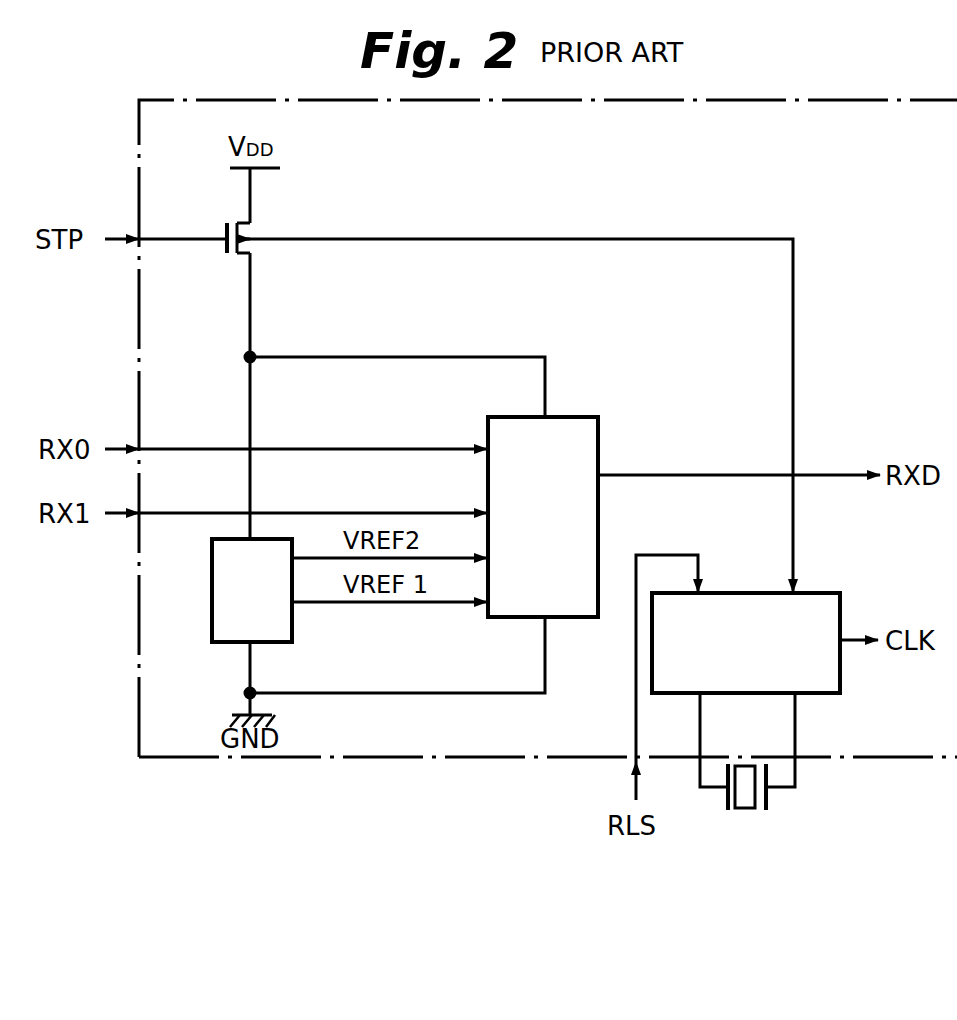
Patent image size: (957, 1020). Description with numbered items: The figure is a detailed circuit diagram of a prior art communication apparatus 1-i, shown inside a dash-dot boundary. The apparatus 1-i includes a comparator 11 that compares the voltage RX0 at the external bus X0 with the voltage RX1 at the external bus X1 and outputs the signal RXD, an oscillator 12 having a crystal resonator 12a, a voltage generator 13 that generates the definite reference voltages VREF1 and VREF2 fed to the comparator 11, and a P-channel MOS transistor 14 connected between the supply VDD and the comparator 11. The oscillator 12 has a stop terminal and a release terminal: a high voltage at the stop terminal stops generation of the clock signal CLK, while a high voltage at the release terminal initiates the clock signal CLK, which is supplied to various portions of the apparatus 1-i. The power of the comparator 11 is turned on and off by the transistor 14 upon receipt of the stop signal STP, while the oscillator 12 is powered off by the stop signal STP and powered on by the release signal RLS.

The communication apparatus 1-i is at (858, 100).
The comparator 11 is at (578, 415).
The oscillator 12 is at (820, 593).
The crystal resonator 12a is at (745, 809).
The voltage generator 13 is at (216, 644).
The P-channel MOS transistor 14 is at (222, 252).